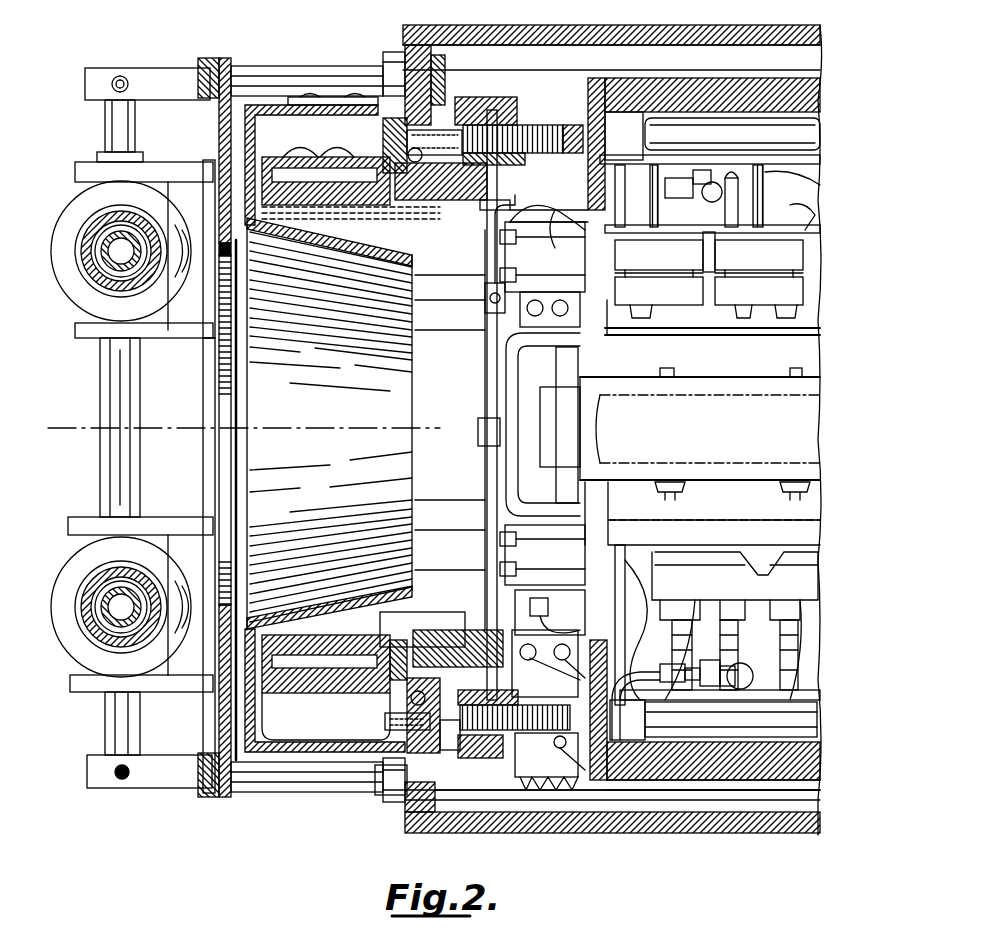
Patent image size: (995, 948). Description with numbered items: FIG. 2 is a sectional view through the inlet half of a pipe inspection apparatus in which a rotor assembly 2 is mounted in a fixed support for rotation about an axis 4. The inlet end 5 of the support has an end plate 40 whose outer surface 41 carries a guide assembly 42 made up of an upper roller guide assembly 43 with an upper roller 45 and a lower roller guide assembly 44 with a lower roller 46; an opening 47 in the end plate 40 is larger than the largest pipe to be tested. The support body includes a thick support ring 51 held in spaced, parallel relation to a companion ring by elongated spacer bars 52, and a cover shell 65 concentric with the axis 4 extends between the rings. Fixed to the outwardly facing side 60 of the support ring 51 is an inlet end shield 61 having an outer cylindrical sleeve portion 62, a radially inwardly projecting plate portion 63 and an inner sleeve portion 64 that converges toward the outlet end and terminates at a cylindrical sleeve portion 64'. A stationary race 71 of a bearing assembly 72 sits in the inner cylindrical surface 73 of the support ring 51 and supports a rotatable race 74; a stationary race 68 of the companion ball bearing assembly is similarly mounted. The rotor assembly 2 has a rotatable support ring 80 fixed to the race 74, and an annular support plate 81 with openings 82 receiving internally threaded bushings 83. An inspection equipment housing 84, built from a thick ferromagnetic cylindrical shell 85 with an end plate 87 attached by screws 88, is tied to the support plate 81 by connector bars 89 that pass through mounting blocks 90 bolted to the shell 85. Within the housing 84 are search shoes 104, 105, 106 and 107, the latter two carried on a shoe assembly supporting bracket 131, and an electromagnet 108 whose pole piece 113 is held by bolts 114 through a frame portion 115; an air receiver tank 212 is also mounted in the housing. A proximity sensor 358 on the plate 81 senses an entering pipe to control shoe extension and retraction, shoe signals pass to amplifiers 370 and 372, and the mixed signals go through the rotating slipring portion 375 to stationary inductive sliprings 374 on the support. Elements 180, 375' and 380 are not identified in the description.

The rotor assembly 2 is at (832, 300).
The axis 4 is at (272, 428).
The inlet end 5 is at (62, 522).
The end plate 40 is at (262, 588).
The outer surface 41 is at (219, 718).
The guide assembly 42 is at (97, 68).
The upper roller guide assembly 43 is at (60, 182).
The lower roller guide assembly 44 is at (60, 648).
The upper roller 45 is at (58, 225).
The lower roller 46 is at (56, 590).
The opening 47 is at (258, 600).
The support ring 51 is at (436, 812).
The spacer bars 52 is at (524, 800).
The outwardly facing side 60 is at (382, 790).
The inlet end shield 61 is at (252, 770).
The outer cylindrical sleeve portion 62 is at (270, 775).
The plate portion 63 is at (219, 730).
The inner sleeve portion 64 is at (342, 346).
The cylindrical sleeve portion 64' is at (457, 405).
The cover shell 65 is at (642, 790).
The stationary race 68 is at (219, 124).
The stationary race 71 is at (448, 735).
The bearing assembly 72 is at (392, 650).
The inner cylindrical surface 73 is at (385, 710).
The rotatable race 74 is at (426, 650).
The rotatable support ring 80 is at (352, 590).
The annular support plate 81 is at (468, 758).
The openings 82 is at (515, 760).
The bushings 83 is at (532, 700).
The inspection equipment housing 84 is at (705, 745).
The cylindrical shell 85 is at (760, 716).
The end plate 87 is at (580, 790).
The screws 88 is at (603, 790).
The connector bars 89 is at (668, 118).
The mounting blocks 90 is at (700, 716).
The search shoe 104 is at (652, 318).
The search shoe 105 is at (775, 318).
The search shoe 106 is at (695, 556).
The search shoe 107 is at (780, 556).
The electromagnet 108 is at (520, 360).
The pole piece 113 is at (750, 435).
The bolts 114 is at (665, 496).
The frame portion 115 is at (712, 490).
The shoe assembly supporting bracket 131 is at (628, 552).
The block 180 is at (605, 166).
The air receiver tank 212 is at (714, 312).
The proximity sensor 358 is at (483, 290).
The amplifier 370 is at (512, 548).
The amplifier 372 is at (556, 248).
The stationary inductive sliprings 374 is at (308, 693).
The rotating portion of induction slipring 375 is at (435, 350).
The lower rod 375' is at (301, 789).
The upper rod 380 is at (330, 66).